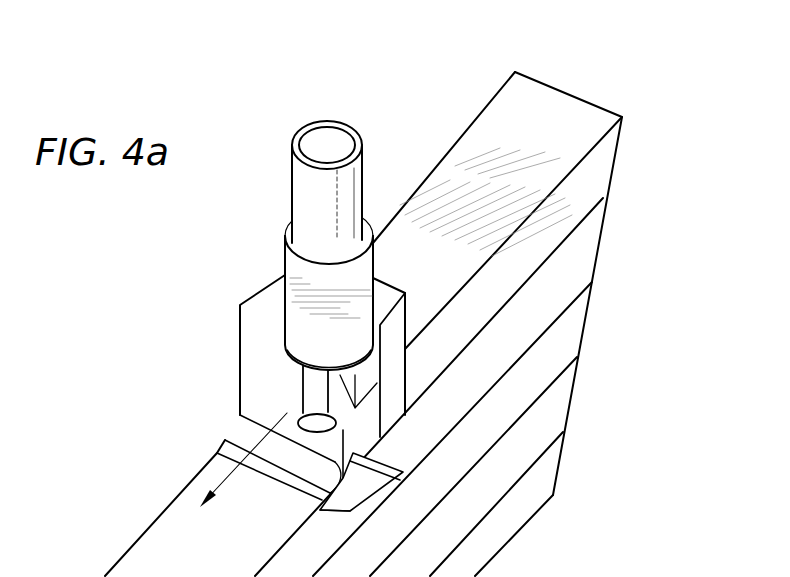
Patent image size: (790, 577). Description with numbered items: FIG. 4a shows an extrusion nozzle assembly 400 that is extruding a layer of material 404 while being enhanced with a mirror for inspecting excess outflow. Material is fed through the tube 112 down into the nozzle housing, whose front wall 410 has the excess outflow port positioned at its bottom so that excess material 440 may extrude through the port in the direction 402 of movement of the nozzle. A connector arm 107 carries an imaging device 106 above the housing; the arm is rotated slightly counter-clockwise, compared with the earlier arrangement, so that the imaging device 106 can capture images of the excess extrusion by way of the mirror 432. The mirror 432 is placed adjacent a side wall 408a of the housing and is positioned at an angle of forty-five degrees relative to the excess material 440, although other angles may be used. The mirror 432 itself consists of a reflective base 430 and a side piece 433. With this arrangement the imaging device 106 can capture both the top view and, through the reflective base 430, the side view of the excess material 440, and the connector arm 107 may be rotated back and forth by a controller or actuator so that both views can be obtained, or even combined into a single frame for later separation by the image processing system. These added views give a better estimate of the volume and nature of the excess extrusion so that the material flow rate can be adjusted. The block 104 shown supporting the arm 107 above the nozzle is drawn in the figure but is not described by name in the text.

The tube 112 is at (305, 182).
The nozzle assembly 400 is at (390, 162).
The layer of material 404 is at (632, 98).
The connector arm 107 is at (322, 278).
The imaging device 106 is at (370, 363).
The mounting block 104 is at (308, 398).
The front wall 410 is at (247, 407).
The side wall 408a is at (393, 382).
The direction of movement 402 is at (257, 443).
The excess material 440 is at (303, 462).
The side piece 433 is at (388, 467).
The reflective base 430 is at (357, 497).
The mirror 432 is at (323, 511).